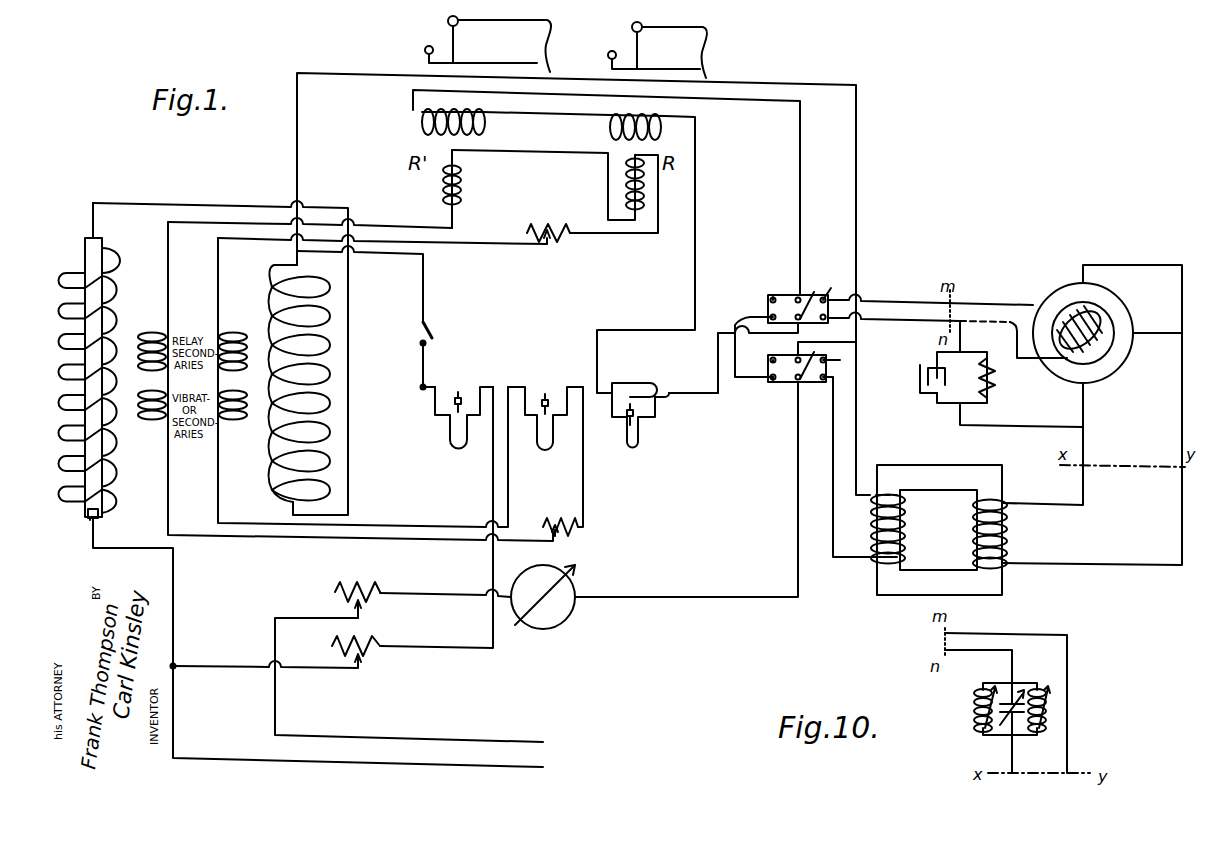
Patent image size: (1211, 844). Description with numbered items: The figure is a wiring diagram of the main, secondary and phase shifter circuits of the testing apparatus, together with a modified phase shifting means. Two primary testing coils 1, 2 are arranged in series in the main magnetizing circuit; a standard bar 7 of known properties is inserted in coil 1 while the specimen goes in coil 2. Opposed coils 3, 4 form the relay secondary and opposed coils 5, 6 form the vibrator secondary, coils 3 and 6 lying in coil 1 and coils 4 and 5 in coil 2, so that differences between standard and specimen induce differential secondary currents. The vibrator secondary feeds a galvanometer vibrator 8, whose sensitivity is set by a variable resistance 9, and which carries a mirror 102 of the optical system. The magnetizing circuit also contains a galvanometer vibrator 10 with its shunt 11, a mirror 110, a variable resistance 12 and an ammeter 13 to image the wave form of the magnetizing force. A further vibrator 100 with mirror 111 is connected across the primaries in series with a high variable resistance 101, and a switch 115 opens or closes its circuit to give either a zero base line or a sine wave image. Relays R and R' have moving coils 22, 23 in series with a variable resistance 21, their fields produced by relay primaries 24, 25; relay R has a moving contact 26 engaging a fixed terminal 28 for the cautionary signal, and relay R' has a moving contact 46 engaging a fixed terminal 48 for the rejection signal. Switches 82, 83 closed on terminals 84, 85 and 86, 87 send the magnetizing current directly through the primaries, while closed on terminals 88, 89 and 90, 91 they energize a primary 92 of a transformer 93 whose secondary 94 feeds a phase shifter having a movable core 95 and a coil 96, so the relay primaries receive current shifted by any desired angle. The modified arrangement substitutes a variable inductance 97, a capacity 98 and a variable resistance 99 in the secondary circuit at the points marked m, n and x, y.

In FIG. 1, the primary testing coil 1 is at (73, 495).
In FIG. 1, the primary testing coil 2 is at (312, 413).
In FIG. 1, the relay secondary coil 3 is at (146, 333).
In FIG. 1, the relay secondary coil 4 is at (236, 333).
In FIG. 1, the vibrator secondary coil 5 is at (235, 422).
In FIG. 1, the vibrator secondary coil 6 is at (150, 420).
In FIG. 1, the bar 7 is at (88, 520).
In FIG. 1, the galvanometer vibrator 8 is at (542, 450).
In FIG. 1, the variable resistance 9 is at (562, 518).
In FIG. 1, the galvanometer vibrator 10 is at (640, 442).
In FIG. 1, the shunt 11 is at (627, 383).
In FIG. 1, the variable resistance 12 is at (370, 588).
In FIG. 1, the ammeter 13 is at (566, 613).
In FIG. 1, the variable resistance 21 is at (547, 224).
In FIG. 1, the moving coil 22 is at (646, 190).
In FIG. 1, the moving coil 23 is at (463, 185).
In FIG. 1, the relay primary 24 is at (610, 133).
In FIG. 1, the relay primary 25 is at (422, 128).
In FIG. 1, the moving contact 26 is at (642, 42).
In FIG. 1, the fixed terminal 28 is at (609, 52).
In FIG. 1, the moving contact 46 is at (458, 42).
In FIG. 1, the fixed terminal 48 is at (425, 50).
In FIG. 1, the switch 82 is at (802, 384).
In FIG. 1, the switch 83 is at (805, 290).
In FIG. 1, the terminal 84 is at (775, 382).
In FIG. 1, the terminal 85 is at (770, 358).
In FIG. 1, the terminal 86 is at (770, 316).
In FIG. 1, the terminal 87 is at (773, 296).
In FIG. 1, the terminal 88 is at (836, 390).
In FIG. 1, the terminal 89 is at (840, 360).
In FIG. 1, the terminal 90 is at (836, 318).
In FIG. 1, the terminal 91 is at (828, 296).
In FIG. 1, the transformer primary 92 is at (890, 563).
In FIG. 1, the transformer 93 is at (939, 530).
In FIG. 1, the transformer secondary 94 is at (1005, 560).
In FIG. 1, the movable core 95 is at (1098, 318).
In FIG. 1, the coil 96 is at (1135, 330).
In FIG. 10, the variable inductance 97 is at (973, 712).
In FIG. 10, the capacity 98 is at (1015, 725).
In FIG. 10, the variable resistance 99 is at (1050, 710).
In FIG. 1, the vibrator 100 is at (450, 442).
In FIG. 1, the variable resistance 101 is at (380, 648).
In FIG. 1, the mirror 102 is at (548, 398).
In FIG. 1, the mirror 110 is at (628, 418).
In FIG. 1, the mirror 111 is at (440, 395).
In FIG. 1, the switch 115 is at (435, 326).